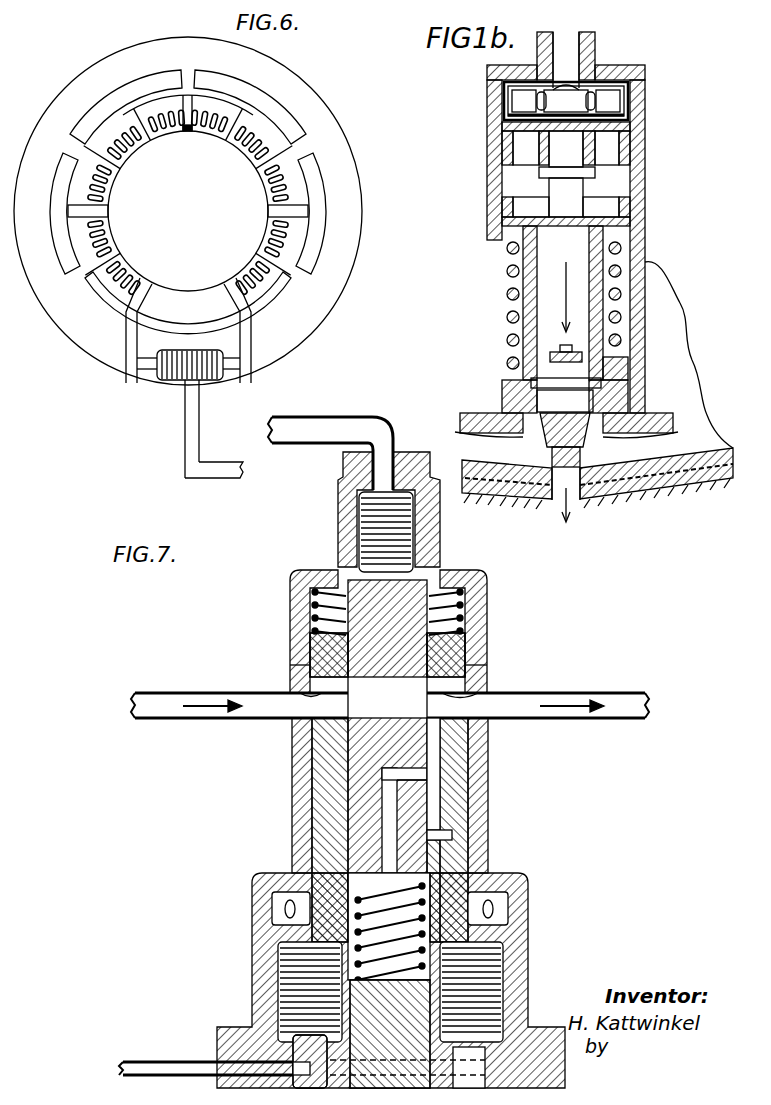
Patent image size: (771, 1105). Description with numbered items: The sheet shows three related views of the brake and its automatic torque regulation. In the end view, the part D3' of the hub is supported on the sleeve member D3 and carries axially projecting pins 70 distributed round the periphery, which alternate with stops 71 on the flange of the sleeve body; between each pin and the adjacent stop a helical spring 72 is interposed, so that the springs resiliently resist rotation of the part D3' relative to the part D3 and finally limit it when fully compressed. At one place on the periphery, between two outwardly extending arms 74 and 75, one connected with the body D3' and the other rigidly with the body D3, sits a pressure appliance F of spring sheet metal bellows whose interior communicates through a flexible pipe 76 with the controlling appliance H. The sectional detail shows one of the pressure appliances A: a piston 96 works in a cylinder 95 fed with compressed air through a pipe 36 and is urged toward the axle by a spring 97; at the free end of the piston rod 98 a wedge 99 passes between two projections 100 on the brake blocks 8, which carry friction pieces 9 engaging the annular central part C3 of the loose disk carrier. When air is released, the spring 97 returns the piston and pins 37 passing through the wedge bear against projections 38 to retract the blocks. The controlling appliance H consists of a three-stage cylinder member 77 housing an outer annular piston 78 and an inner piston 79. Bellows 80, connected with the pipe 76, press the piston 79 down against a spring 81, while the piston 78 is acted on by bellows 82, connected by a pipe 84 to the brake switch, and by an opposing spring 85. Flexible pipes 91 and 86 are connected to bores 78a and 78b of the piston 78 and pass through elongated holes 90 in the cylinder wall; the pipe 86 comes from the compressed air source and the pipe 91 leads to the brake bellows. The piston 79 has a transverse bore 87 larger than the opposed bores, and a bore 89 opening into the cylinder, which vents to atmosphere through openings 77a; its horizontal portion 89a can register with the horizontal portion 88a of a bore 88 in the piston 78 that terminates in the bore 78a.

In FIG. 6, the sleeve member D3 is at (188, 211).
In FIG. 6, the part of the hub D3' is at (188, 211).
In FIG. 6, the pins 70 is at (104, 210).
In FIG. 6, the stops 71 is at (170, 95).
In FIG. 6, the helical spring 72 is at (105, 262).
In FIG. 6, the arm 74 is at (127, 356).
In FIG. 6, the arm 75 is at (252, 360).
In FIG. 6, the pressure appliance F is at (217, 380).
In FIG. 6, the flexible pipe 76 is at (185, 466).
In FIG. 7, the flexible pipe 76 is at (280, 418).
In FIG. 1B, the pipes 36 is at (600, 48).
In FIG. 1B, the pressure appliances A is at (487, 66).
In FIG. 1B, the cylinders 95 is at (645, 83).
In FIG. 1B, the pistons 96 is at (630, 130).
In FIG. 1B, the springs 97 is at (622, 248).
In FIG. 1B, the piston rod 98 is at (527, 253).
In FIG. 1B, the projections 38 is at (520, 436).
In FIG. 1B, the pins 37 is at (548, 450).
In FIG. 1B, the projections 100 is at (560, 470).
In FIG. 1B, the wedge 99 is at (585, 468).
In FIG. 1B, the annular central part C3 is at (712, 484).
In FIG. 1B, the brake blocks 8 is at (476, 496).
In FIG. 1B, the friction pieces 9 is at (500, 500).
In FIG. 7, the bellows 80 is at (362, 518).
In FIG. 7, the controlling appliance H is at (300, 608).
In FIG. 7, the inner piston 79 is at (415, 660).
In FIG. 7, the spring 85 is at (462, 600).
In FIG. 7, the elongated holes 90 is at (296, 670).
In FIG. 7, the bore 78b is at (300, 686).
In FIG. 7, the bore 78a is at (485, 690).
In FIG. 7, the flexible pipe 86 is at (194, 720).
In FIG. 7, the flexible pipe 91 is at (612, 720).
In FIG. 7, the transverse bore 87 is at (372, 700).
In FIG. 7, the outer annular piston 78 is at (458, 786).
In FIG. 7, the bore 89 is at (385, 815).
In FIG. 7, the horizontal portion of bore 89a is at (412, 773).
In FIG. 7, the bore 88 is at (445, 824).
In FIG. 7, the horizontal portion of bore 88a is at (465, 842).
In FIG. 7, the three-stage cylinder member 77 is at (485, 865).
In FIG. 7, the openings 77a is at (285, 912).
In FIG. 7, the spring 81 is at (425, 898).
In FIG. 7, the bellows 82 is at (285, 960).
In FIG. 7, the pipe 84 is at (166, 1062).